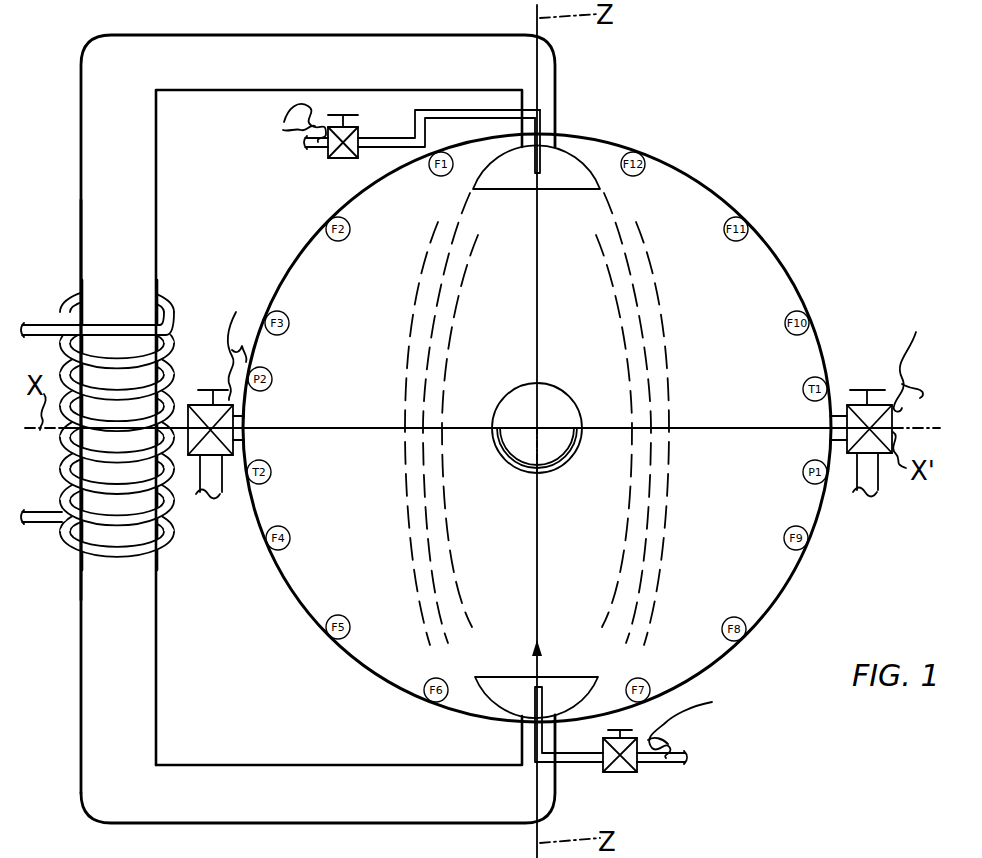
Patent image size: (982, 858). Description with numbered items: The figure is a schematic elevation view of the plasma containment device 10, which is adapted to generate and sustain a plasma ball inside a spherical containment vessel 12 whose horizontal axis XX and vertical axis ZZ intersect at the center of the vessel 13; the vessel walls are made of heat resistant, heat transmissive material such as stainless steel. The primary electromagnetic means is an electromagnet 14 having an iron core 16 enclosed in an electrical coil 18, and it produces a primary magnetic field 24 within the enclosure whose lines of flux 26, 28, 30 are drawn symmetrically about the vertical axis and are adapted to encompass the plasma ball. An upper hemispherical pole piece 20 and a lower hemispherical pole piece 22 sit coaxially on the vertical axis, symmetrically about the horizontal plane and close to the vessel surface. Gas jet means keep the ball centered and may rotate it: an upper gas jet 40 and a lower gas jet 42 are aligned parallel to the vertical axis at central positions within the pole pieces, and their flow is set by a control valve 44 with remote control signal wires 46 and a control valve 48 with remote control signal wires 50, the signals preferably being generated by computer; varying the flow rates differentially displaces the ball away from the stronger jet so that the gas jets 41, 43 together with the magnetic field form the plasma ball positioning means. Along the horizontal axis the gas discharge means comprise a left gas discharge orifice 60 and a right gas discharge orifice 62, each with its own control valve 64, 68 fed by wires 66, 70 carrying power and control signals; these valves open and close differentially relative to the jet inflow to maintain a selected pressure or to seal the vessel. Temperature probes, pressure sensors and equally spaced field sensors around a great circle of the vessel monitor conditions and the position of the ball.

The plasma containment device 10 is at (818, 123).
The containment vessel 12 is at (735, 143).
The center of the vessel 13 is at (537, 428).
The electromagnet 14 is at (401, 34).
The iron core 16 is at (324, 56).
The electrical coil 18 is at (44, 322).
The upper hemispherical pole piece 20 is at (580, 152).
The lower hemispherical pole piece 22 is at (500, 710).
The primary magnetic field 24 is at (666, 323).
The line of flux 26 is at (649, 272).
The line of flux 28 is at (632, 262).
The line of flux 30 is at (604, 246).
The upper gas jet 40 is at (545, 155).
The gas jet 41 is at (539, 200).
The lower gas jet 42 is at (548, 704).
The gas jet 43 is at (545, 658).
The control valve 44 is at (332, 160).
The remote control signal wires 46 is at (292, 112).
The control valve 48 is at (616, 772).
The remote control signal wires 50 is at (702, 722).
The left gas discharge orifice 60 is at (240, 426).
The right gas discharge orifice 62 is at (830, 425).
The control valve 64 is at (196, 400).
The wires 66 is at (240, 341).
The control valve 68 is at (847, 395).
The wires 70 is at (918, 356).